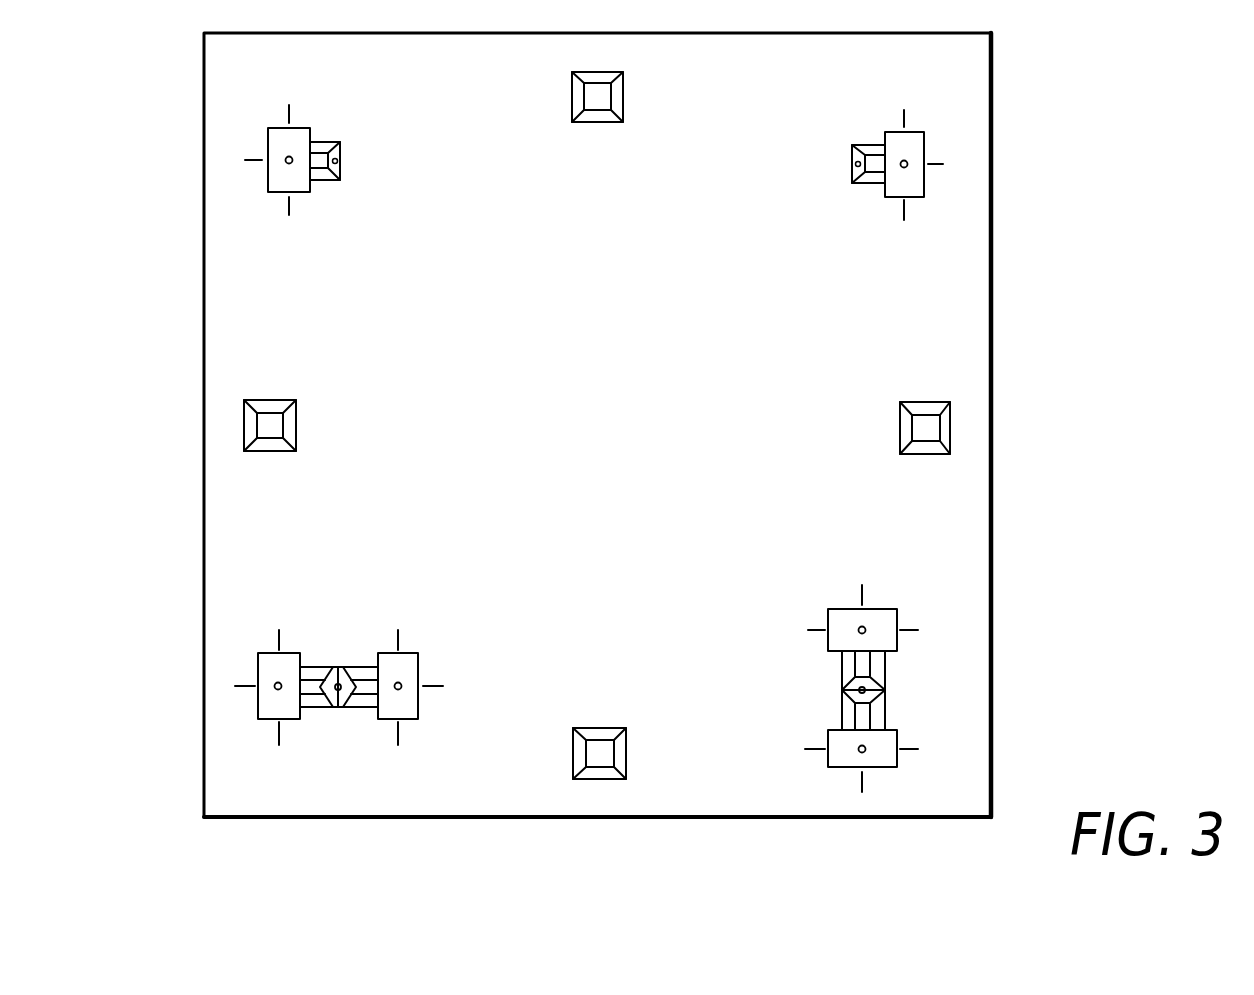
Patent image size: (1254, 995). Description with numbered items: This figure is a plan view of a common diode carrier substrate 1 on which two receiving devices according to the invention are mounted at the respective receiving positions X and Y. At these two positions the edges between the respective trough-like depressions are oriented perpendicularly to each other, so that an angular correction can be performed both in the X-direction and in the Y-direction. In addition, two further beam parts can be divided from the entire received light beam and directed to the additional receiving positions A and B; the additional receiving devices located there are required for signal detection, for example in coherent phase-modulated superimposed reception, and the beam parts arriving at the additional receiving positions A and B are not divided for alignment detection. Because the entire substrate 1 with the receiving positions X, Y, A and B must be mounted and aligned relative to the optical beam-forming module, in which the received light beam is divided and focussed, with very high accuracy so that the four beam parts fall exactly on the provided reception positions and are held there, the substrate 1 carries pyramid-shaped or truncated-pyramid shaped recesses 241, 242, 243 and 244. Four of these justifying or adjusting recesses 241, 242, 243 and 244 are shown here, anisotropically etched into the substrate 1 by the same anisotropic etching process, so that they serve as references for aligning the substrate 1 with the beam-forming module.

The substrate 1 is at (970, 275).
The pyramid-shaped or truncated-pyramid shaped recess 241 is at (296, 449).
The pyramid-shaped or truncated-pyramid shaped recess 242 is at (900, 452).
The pyramid-shaped or truncated-pyramid shaped recess 243 is at (572, 113).
The pyramid-shaped or truncated-pyramid shaped recess 244 is at (627, 745).
The additional receiving position A is at (335, 184).
The additional receiving position B is at (866, 189).
The receiving position X is at (357, 713).
The receiving position Y is at (887, 713).